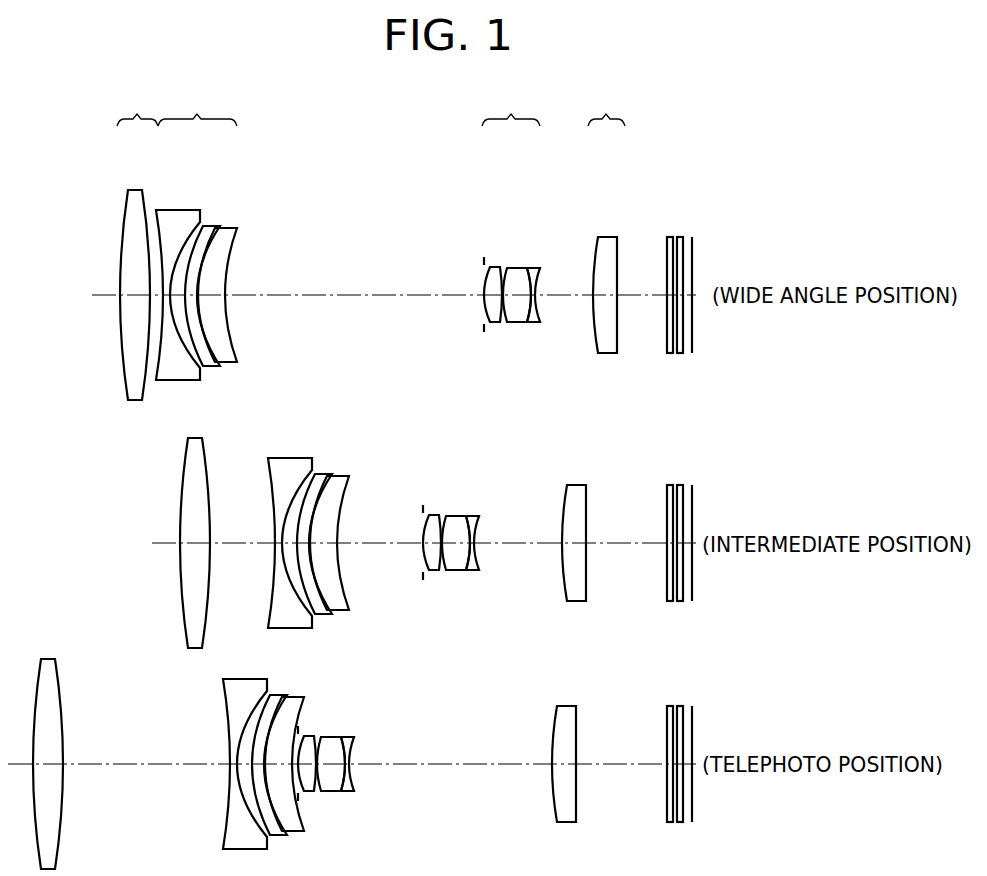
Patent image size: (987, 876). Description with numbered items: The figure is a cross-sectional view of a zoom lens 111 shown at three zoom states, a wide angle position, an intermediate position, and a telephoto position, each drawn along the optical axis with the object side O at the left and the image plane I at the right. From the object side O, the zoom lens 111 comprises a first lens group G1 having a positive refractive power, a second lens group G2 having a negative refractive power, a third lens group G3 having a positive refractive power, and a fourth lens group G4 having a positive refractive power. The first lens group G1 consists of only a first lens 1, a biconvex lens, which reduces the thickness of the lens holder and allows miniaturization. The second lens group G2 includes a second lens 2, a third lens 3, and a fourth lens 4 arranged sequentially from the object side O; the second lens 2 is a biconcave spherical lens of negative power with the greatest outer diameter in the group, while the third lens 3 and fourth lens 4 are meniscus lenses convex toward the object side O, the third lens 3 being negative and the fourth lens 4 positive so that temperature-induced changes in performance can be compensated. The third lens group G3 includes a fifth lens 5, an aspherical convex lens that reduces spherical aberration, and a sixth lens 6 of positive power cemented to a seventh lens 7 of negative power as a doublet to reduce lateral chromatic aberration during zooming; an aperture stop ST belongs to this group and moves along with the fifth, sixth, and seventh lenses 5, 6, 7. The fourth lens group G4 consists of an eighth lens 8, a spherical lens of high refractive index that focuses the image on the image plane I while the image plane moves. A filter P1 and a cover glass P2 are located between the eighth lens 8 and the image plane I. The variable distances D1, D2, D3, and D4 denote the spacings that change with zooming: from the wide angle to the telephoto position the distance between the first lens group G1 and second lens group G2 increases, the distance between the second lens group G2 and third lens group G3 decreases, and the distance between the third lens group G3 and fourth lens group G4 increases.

The first lens 1 is at (135, 190).
The second lens 2 is at (178, 210).
The third lens 3 is at (210, 226).
The fourth lens 4 is at (231, 228).
The fifth lens 5 is at (490, 267).
The sixth lens 6 is at (515, 268).
The seventh lens 7 is at (536, 268).
The eighth lens 8 is at (607, 237).
The first lens group G1 is at (137, 107).
The second lens group G2 is at (197, 107).
The third lens group G3 is at (511, 107).
The fourth lens group G4 is at (606, 107).
The aperture stop ST is at (486, 265).
The filter P1 is at (668, 237).
The cover glass P2 is at (681, 237).
The image plane I is at (699, 295).
The object side O is at (352, 524).
The variable distance D1 is at (157, 297).
The variable distance D2 is at (392, 295).
The variable distance D3 is at (567, 295).
The variable distance D4 is at (640, 295).
The zoom lens 111 is at (377, 163).